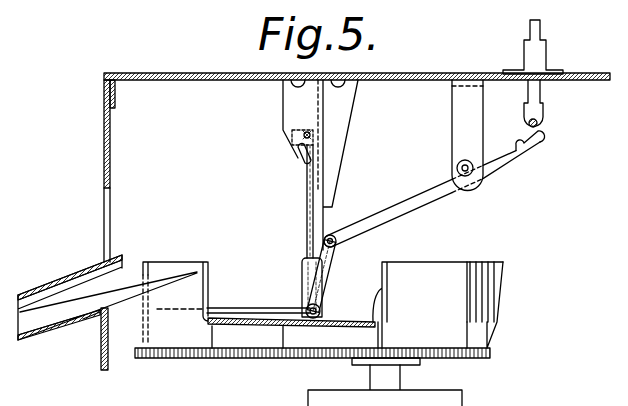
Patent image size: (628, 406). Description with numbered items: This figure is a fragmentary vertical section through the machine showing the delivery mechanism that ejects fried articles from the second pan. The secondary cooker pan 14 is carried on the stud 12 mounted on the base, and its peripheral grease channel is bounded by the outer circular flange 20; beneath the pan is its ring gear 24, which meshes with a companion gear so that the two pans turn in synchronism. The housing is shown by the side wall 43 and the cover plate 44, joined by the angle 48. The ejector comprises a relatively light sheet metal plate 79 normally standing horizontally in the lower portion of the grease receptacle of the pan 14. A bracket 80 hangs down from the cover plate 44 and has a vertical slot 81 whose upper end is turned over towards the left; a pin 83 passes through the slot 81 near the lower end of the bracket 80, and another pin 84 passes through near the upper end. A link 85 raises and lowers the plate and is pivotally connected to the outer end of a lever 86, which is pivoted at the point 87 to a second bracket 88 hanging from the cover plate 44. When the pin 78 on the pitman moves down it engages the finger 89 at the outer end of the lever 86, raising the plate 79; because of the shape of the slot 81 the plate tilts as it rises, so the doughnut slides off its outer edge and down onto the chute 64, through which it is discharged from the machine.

The cover plate 44 is at (437, 73).
The angle 48 is at (116, 98).
The side wall 43 is at (104, 170).
The chute 64 is at (49, 277).
The bracket 80 is at (298, 160).
The vertical slot 81 is at (307, 229).
The pin 84 is at (312, 264).
The link 85 is at (322, 280).
The pin 83 is at (321, 312).
The sheet metal plate 79 is at (233, 306).
The lever 86 is at (442, 189).
The bracket 88 is at (468, 147).
The pivot point 87 is at (474, 176).
The pin 78 is at (540, 125).
The finger 89 is at (538, 142).
The pan 14 is at (477, 260).
The outer circular flange 20 is at (323, 289).
The ring gear 24 is at (483, 356).
The stud 12 is at (393, 377).